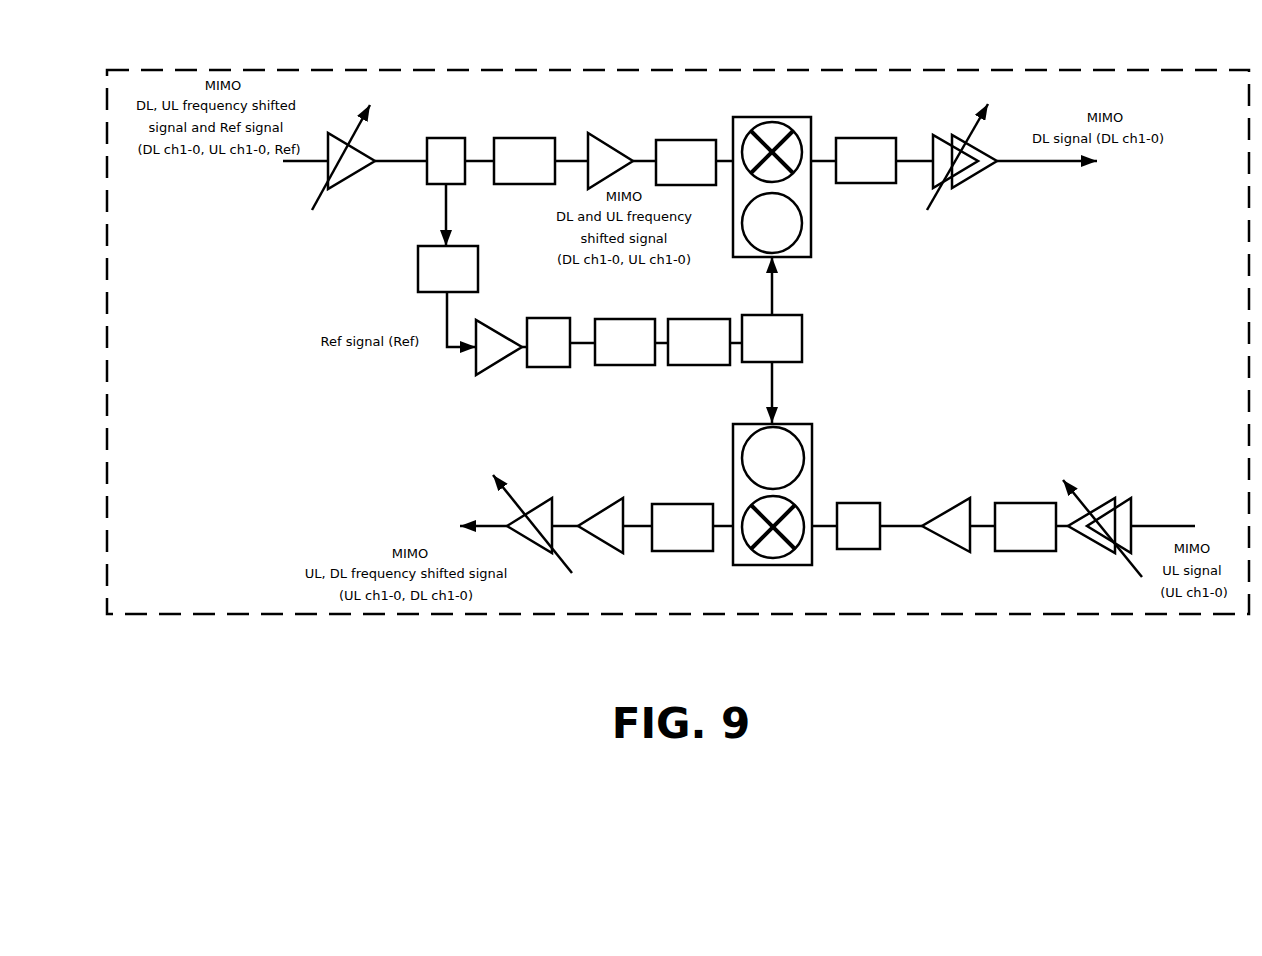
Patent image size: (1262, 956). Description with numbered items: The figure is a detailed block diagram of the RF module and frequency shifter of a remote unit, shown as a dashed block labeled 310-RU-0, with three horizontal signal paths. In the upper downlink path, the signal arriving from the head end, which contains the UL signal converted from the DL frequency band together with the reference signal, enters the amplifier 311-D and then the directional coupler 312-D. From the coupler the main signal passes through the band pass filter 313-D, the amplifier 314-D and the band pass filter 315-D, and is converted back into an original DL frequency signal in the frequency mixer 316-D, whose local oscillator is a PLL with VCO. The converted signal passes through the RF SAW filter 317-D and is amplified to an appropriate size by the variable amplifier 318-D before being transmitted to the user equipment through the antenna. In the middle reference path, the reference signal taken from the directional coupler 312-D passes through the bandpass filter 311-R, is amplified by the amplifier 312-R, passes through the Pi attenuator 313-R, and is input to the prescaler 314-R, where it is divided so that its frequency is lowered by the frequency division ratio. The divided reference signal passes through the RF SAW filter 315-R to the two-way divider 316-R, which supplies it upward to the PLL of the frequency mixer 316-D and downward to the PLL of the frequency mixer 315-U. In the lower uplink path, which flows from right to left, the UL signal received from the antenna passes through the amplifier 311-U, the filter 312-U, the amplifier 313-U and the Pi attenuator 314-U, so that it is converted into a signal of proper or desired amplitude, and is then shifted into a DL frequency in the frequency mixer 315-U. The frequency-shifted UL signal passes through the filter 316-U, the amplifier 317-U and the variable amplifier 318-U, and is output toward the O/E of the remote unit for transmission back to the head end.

The RF module of remote unit and frequency shifter 310-RU-0 is at (655, 70).
The amplifier 311-D is at (326, 172).
The directional coupler 312-D is at (426, 184).
The band pass filter 313-D is at (540, 190).
The amplifier 314-D is at (608, 140).
The band pass filter 315-D is at (690, 117).
The frequency mixer 316-D is at (790, 96).
The RF SAW filter 317-D is at (850, 137).
The variable amplifier 318-D is at (978, 180).
The bandpass filter 311-R is at (417, 268).
The amplifier 312-R is at (490, 375).
The Pi attenuator 313-R is at (546, 367).
The prescaler 314-R is at (610, 366).
The RF SAW filter 315-R is at (688, 365).
The two-way divider 316-R is at (803, 338).
The amplifier 311-U is at (1126, 498).
The filter 312-U is at (1017, 503).
The amplifier 313-U is at (948, 498).
The Pi attenuator 314-U is at (858, 502).
The frequency mixer 315-U is at (812, 447).
The filter 316-U is at (685, 504).
The amplifier 317-U is at (600, 498).
The variable amplifier 318-U is at (530, 498).